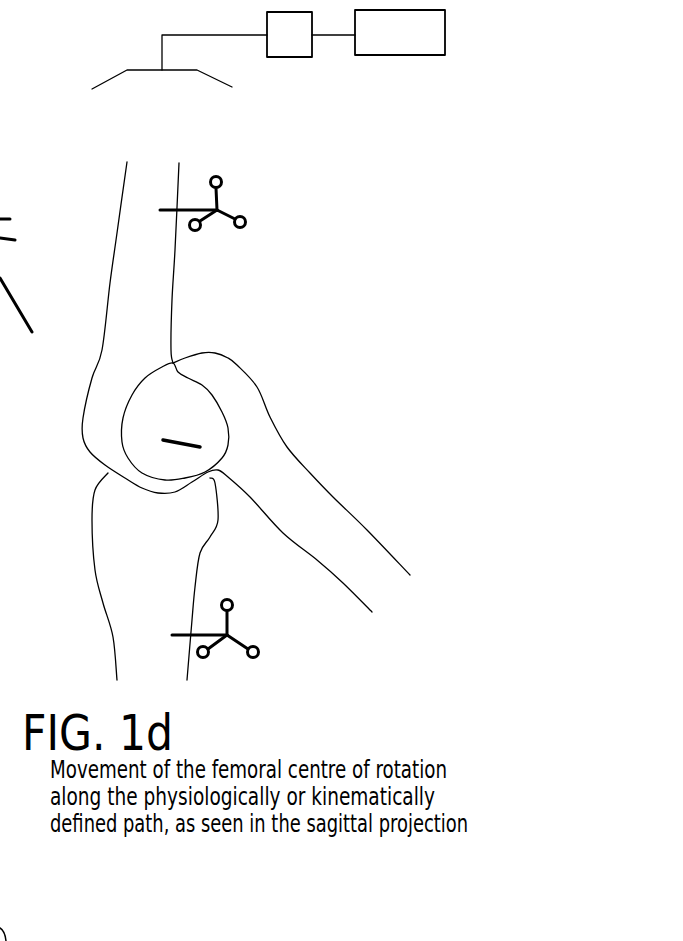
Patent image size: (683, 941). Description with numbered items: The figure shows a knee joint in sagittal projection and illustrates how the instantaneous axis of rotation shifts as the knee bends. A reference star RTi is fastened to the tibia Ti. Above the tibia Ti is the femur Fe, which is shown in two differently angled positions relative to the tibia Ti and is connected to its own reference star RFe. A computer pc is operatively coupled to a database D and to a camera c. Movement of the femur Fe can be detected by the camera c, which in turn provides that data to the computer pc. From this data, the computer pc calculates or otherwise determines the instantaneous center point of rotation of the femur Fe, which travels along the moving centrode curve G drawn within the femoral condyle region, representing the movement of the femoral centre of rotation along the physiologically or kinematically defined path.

The camera c is at (105, 82).
The computer pc is at (311, 34).
The database D is at (400, 32).
The femur Fe is at (147, 312).
The reference star RFe is at (222, 199).
The moving centrode curve G is at (182, 438).
The tibia Ti is at (117, 592).
The reference star RTi is at (231, 629).